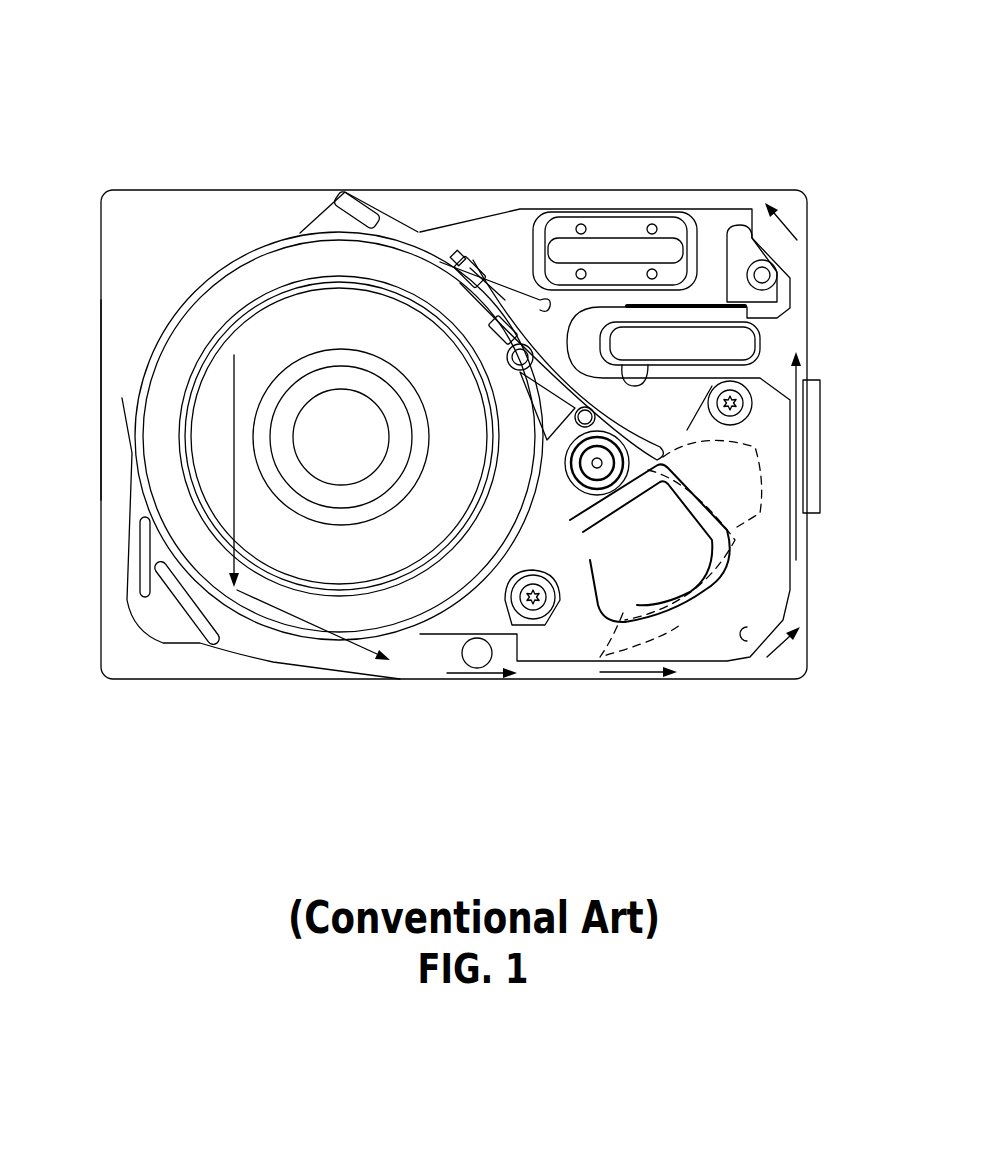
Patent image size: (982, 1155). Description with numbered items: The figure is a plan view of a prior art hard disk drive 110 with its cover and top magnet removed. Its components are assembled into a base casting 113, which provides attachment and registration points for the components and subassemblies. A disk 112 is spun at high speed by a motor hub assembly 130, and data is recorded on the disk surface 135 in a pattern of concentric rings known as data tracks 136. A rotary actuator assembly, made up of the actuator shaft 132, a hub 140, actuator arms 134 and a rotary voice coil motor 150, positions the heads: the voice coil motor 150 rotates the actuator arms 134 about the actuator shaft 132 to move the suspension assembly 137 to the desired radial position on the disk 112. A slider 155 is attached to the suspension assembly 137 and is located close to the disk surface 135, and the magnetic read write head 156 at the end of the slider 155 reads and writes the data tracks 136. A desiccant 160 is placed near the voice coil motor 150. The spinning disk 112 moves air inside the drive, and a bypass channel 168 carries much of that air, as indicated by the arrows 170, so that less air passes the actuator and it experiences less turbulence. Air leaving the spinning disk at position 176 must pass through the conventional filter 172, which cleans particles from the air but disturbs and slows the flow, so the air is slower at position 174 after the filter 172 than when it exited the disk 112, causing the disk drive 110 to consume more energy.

The disk drive 110 is at (175, 125).
The disk 112 is at (223, 273).
The base casting 113 is at (122, 398).
The motor hub assembly 130 is at (343, 430).
The actuator shaft 132 is at (595, 468).
The actuator arms 134 is at (550, 360).
The disk surface 135 is at (275, 273).
The data tracks 136 is at (190, 490).
The suspension assembly 137 is at (463, 280).
The hub 140 is at (700, 395).
The rotary voice coil motor 150 is at (662, 628).
The slider 155 is at (470, 267).
The magnetic read write head 156 is at (467, 270).
The desiccant 160 is at (815, 405).
The bypass channel 168 is at (287, 663).
The arrows indicating air flow 170 is at (235, 590).
The conventional filter 172 is at (365, 190).
The position after filter 174 is at (362, 158).
The position of air exit from disk 176 is at (307, 643).